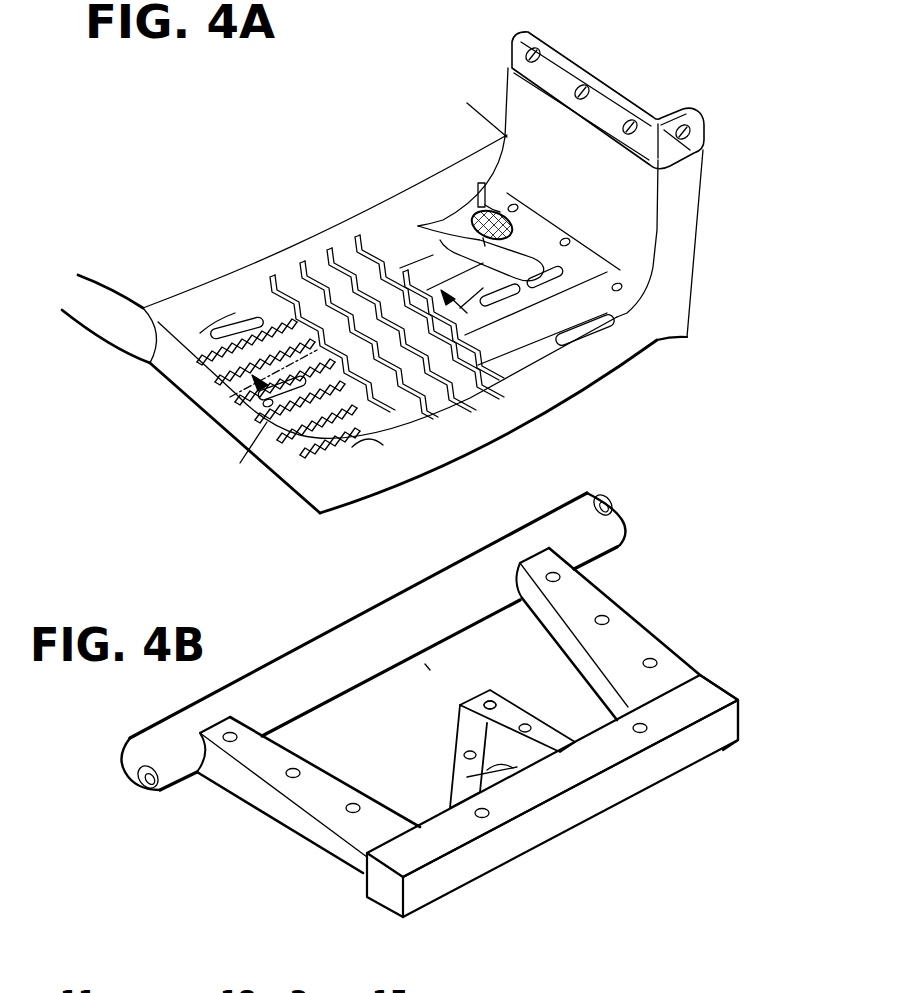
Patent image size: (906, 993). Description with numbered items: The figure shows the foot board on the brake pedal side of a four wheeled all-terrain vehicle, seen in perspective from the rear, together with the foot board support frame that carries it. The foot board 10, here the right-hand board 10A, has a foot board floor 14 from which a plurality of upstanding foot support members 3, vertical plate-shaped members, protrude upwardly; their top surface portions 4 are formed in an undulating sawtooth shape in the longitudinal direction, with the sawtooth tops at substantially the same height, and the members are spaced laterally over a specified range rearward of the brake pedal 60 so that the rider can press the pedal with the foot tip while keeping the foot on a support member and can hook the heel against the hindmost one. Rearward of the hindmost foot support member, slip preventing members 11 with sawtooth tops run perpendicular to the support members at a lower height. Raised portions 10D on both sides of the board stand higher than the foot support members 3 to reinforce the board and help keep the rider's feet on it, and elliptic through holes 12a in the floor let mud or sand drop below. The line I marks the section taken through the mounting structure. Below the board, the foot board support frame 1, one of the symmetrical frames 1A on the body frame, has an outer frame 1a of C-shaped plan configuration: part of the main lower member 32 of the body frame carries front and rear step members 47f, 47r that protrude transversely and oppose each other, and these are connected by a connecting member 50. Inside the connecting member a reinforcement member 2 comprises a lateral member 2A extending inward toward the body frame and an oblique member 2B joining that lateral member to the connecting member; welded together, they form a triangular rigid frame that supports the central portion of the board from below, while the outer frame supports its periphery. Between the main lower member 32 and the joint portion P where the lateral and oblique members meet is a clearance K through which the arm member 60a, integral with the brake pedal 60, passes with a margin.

In FIG. 4A, the foot board 10 is at (212, 212).
In FIG. 4A, the foot board 10A is at (677, 250).
In FIG. 4A, the raised portions 10D is at (405, 208).
In FIG. 4A, the slip preventing members 11 is at (157, 365).
In FIG. 4A, the through holes 12a is at (227, 393).
In FIG. 4A, the foot board floor 14 is at (227, 290).
In FIG. 4A, the foot support members 3 is at (355, 237).
In FIG. 4A, the top surface portions 4 is at (365, 212).
In FIG. 4A, the brake pedal 60 is at (477, 203).
In FIG. 4A, the arm member 60a is at (465, 212).
In FIG. 4A, the section line I— I is at (359, 371).
In FIG. 4B, the main lower member 32 is at (297, 665).
In FIG. 4B, the clearance K is at (430, 670).
In FIG. 4B, the front step member 47f is at (623, 637).
In FIG. 4B, the rear step member 47r is at (320, 790).
In FIG. 4B, the foot board support frame 1 is at (713, 755).
In FIG. 4B, the foot board support frame 1A is at (530, 828).
In FIG. 4B, the outer frame 1a is at (462, 865).
In FIG. 4B, the connecting member 50 is at (657, 765).
In FIG. 4B, the reinforcement member 2 is at (487, 767).
In FIG. 4B, the lateral member 2A is at (515, 713).
In FIG. 4B, the oblique member 2B is at (457, 727).
In FIG. 4B, the joint portion P is at (482, 700).